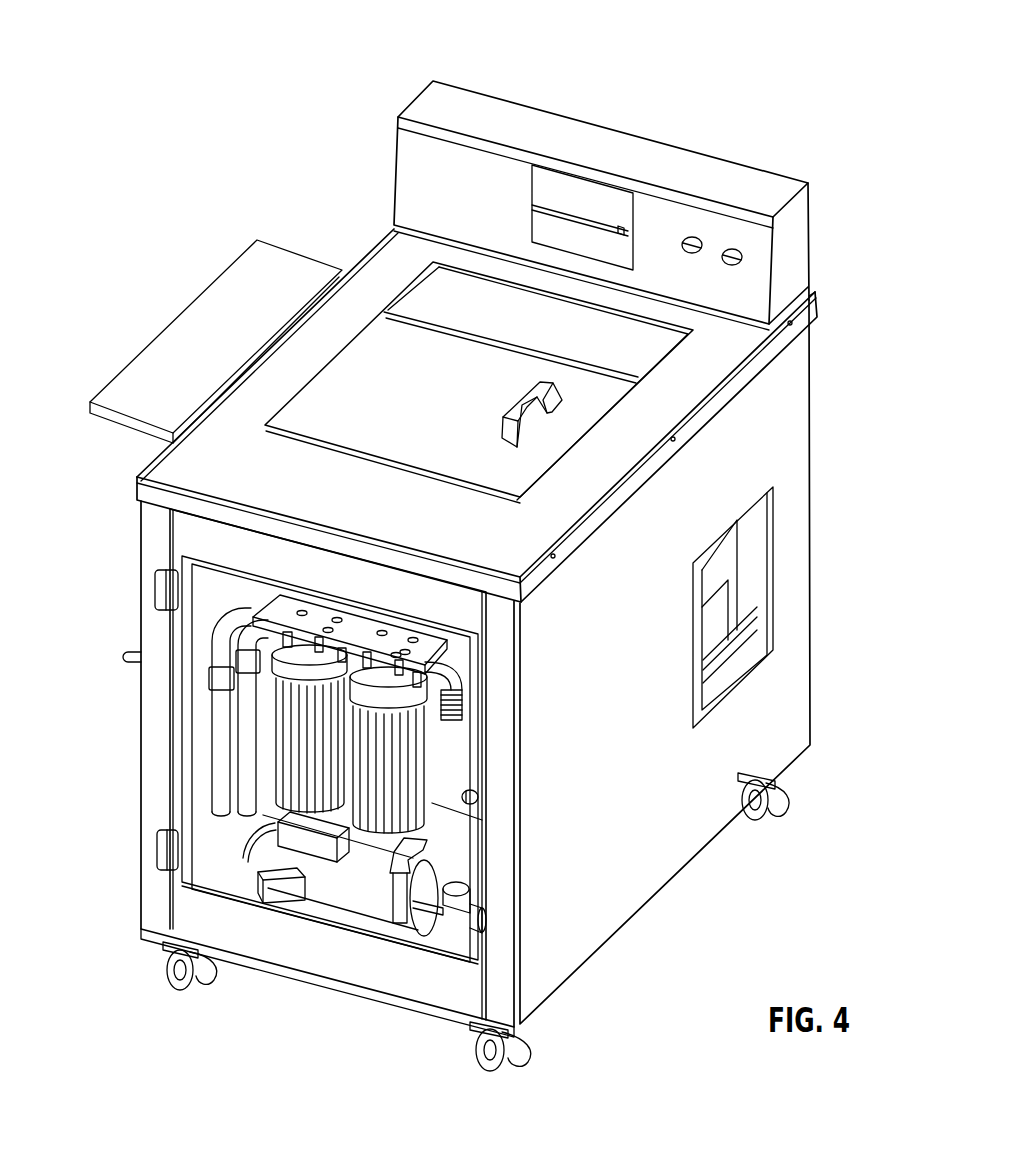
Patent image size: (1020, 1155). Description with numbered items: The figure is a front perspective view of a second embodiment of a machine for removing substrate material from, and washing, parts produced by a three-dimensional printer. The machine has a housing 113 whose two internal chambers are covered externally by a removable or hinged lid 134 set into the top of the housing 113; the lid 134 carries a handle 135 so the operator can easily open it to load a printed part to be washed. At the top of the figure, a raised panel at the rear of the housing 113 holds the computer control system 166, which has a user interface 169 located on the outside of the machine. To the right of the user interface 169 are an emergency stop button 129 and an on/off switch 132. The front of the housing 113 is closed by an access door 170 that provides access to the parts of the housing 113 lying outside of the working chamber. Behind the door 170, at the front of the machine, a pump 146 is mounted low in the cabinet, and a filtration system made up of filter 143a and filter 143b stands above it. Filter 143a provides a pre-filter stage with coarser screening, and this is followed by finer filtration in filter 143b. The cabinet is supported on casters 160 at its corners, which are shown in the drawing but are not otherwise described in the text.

The computer control system 166 is at (661, 102).
The housing 113 is at (800, 352).
The user interface 169 is at (575, 192).
The emergency stop button 129 is at (698, 240).
The on/off switch 132 is at (742, 255).
The lid 134 is at (394, 399).
The handle 135 is at (533, 395).
The access door 170 is at (460, 744).
The filter 143a is at (385, 760).
The filter 143b is at (305, 733).
The pump 146 is at (328, 885).
The casters 160 is at (163, 970).